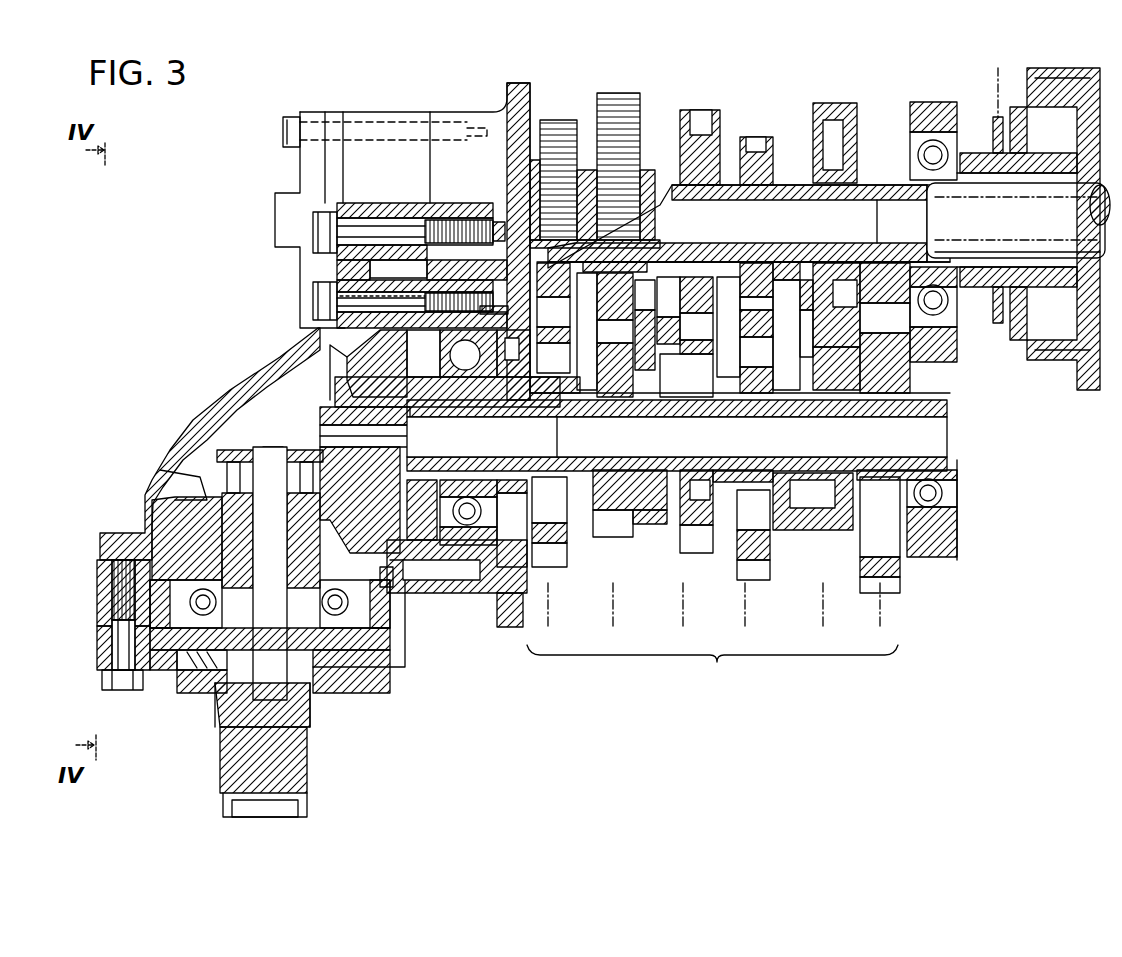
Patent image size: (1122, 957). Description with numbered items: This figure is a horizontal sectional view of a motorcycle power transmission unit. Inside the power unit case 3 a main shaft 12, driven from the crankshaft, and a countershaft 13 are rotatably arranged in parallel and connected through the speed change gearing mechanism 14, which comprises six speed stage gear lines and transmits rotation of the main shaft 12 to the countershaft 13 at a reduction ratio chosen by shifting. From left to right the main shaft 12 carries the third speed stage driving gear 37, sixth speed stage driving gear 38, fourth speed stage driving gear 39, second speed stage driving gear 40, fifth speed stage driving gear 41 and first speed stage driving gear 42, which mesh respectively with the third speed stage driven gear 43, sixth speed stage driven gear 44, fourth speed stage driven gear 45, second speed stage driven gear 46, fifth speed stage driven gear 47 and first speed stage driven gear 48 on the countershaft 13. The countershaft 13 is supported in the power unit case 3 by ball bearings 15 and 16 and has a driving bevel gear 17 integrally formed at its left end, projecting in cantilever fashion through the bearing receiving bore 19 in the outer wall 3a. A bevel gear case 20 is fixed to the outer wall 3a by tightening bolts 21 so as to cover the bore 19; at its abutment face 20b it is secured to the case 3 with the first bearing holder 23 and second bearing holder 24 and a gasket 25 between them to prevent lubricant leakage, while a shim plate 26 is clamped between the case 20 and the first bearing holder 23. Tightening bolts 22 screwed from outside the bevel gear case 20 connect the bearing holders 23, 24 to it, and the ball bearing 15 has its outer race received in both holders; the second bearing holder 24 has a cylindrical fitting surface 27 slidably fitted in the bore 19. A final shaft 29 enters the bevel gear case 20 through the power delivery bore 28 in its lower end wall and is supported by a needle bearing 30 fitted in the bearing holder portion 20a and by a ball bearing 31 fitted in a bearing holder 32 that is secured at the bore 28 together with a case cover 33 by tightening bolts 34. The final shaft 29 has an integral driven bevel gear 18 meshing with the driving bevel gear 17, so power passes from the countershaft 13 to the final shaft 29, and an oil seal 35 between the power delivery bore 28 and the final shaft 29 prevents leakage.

The power unit case 3 is at (492, 152).
The outer wall 3a is at (508, 182).
The main shaft 12 is at (780, 183).
The countershaft 13 is at (677, 460).
The speed change gearing mechanism 14 is at (712, 638).
The ball bearing 15 is at (455, 510).
The ball bearing 16 is at (943, 494).
The driving bevel gear 17 is at (352, 358).
The driven bevel gear 18 is at (322, 549).
The bearing receiving bore 19 is at (514, 353).
The bevel gear case 20 is at (290, 355).
The bearing holder portion 20a is at (190, 475).
The abutment face 20b is at (382, 299).
The tightening bolts 21 is at (316, 226).
The tightening bolts 22 is at (316, 300).
The first bearing holder 23 is at (423, 353).
The second bearing holder 24 is at (478, 306).
The gasket 25 is at (468, 353).
The shim plate 26 is at (432, 210).
The cylindrical fitting surface 27 is at (525, 565).
The power delivery bore 28 is at (392, 598).
The final shaft 29 is at (312, 708).
The needle bearing 30 is at (270, 459).
The ball bearing 31 is at (193, 603).
The bearing holder 32 is at (100, 630).
The case cover 33 is at (100, 652).
The tightening bolts 34 is at (122, 692).
The oil seal 35 is at (195, 672).
The III speed stage driving gear 37 is at (556, 122).
The VI speed stage driving gear 38 is at (617, 95).
The IV speed stage driving gear 39 is at (705, 138).
The II speed stage driving gear 40 is at (760, 140).
The V speed stage driving gear 41 is at (843, 128).
The I speed stage driving gear 42 is at (878, 170).
The III speed stage driven gear 43 is at (568, 540).
The VI speed stage driven gear 44 is at (635, 512).
The IV speed stage driven gear 45 is at (700, 555).
The II speed stage driven gear 46 is at (772, 550).
The V speed stage driven gear 47 is at (785, 530).
The I speed stage driven gear 48 is at (898, 565).